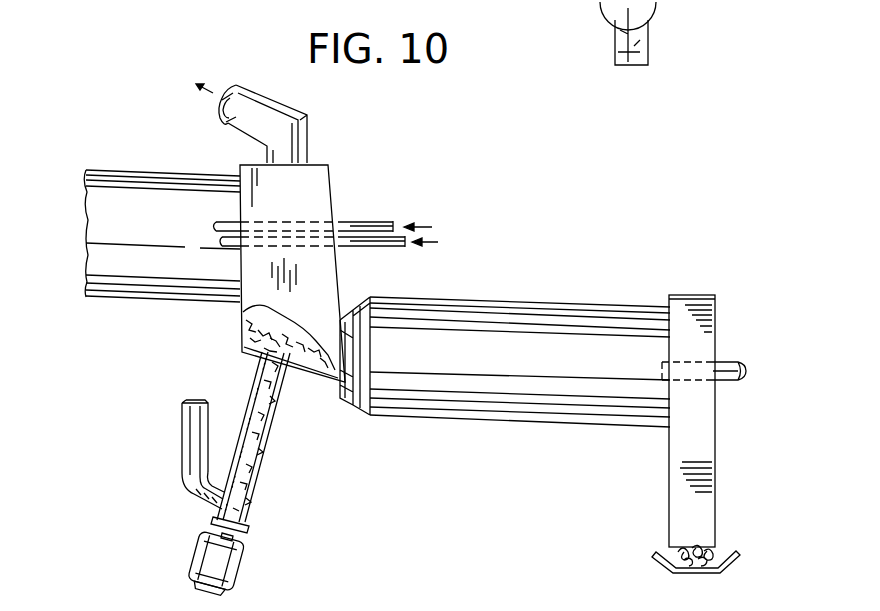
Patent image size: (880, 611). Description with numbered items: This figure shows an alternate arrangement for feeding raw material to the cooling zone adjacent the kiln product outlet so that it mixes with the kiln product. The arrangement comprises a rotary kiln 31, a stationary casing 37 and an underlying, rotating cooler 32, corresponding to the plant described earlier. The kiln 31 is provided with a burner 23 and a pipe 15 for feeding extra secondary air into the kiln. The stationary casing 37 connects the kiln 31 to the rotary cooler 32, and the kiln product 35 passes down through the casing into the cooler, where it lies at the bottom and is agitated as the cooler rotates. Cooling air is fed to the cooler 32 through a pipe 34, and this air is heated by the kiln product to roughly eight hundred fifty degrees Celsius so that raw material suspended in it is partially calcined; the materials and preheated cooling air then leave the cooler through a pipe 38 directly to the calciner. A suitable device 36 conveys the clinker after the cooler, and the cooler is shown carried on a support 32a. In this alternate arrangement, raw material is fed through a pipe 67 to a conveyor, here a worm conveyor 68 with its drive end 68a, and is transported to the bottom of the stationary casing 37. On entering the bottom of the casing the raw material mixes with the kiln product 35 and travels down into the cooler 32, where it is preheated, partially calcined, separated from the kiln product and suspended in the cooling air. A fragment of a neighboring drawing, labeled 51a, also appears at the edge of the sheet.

The rotary kiln 31 is at (120, 166).
The stationary casing 37 is at (320, 183).
The pipe 38 is at (283, 114).
The burner 23 is at (363, 222).
The pipe 15 is at (373, 242).
The kiln product 35 is at (242, 319).
The rotating cooler 32 is at (532, 294).
The post 32a is at (710, 453).
The pipe 34 is at (727, 368).
The conveying device 36 is at (652, 566).
The pipe 67 is at (187, 439).
The worm conveyor 68 is at (254, 494).
The clamp 68a is at (226, 557).
The fragment of adjacent figure 51a is at (658, 5).